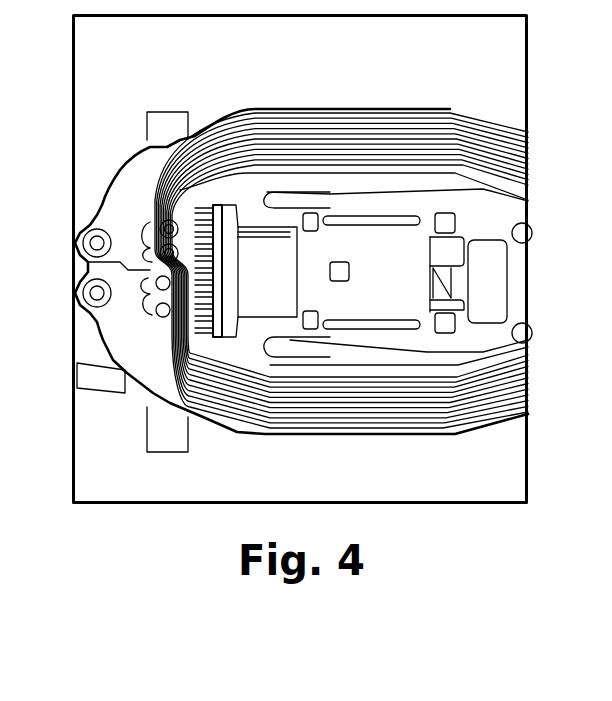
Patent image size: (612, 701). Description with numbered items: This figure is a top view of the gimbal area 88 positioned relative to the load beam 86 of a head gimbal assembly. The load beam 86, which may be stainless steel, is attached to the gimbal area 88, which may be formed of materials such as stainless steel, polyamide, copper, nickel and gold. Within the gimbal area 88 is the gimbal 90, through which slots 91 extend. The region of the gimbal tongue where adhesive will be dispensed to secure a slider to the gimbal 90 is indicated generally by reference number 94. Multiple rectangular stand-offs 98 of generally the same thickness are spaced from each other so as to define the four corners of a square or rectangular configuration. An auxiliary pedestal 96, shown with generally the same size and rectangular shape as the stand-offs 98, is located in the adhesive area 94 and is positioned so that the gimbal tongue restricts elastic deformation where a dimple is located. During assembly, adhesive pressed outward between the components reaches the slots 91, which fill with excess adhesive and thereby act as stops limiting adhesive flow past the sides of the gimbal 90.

The load beam 86 is at (485, 217).
The gimbal area 88 is at (492, 108).
The gimbal 90 is at (396, 300).
The slots 91 is at (377, 216).
The adhesive area 94 is at (368, 262).
The pedestal 96 is at (342, 276).
The stand-offs 98 is at (447, 218).